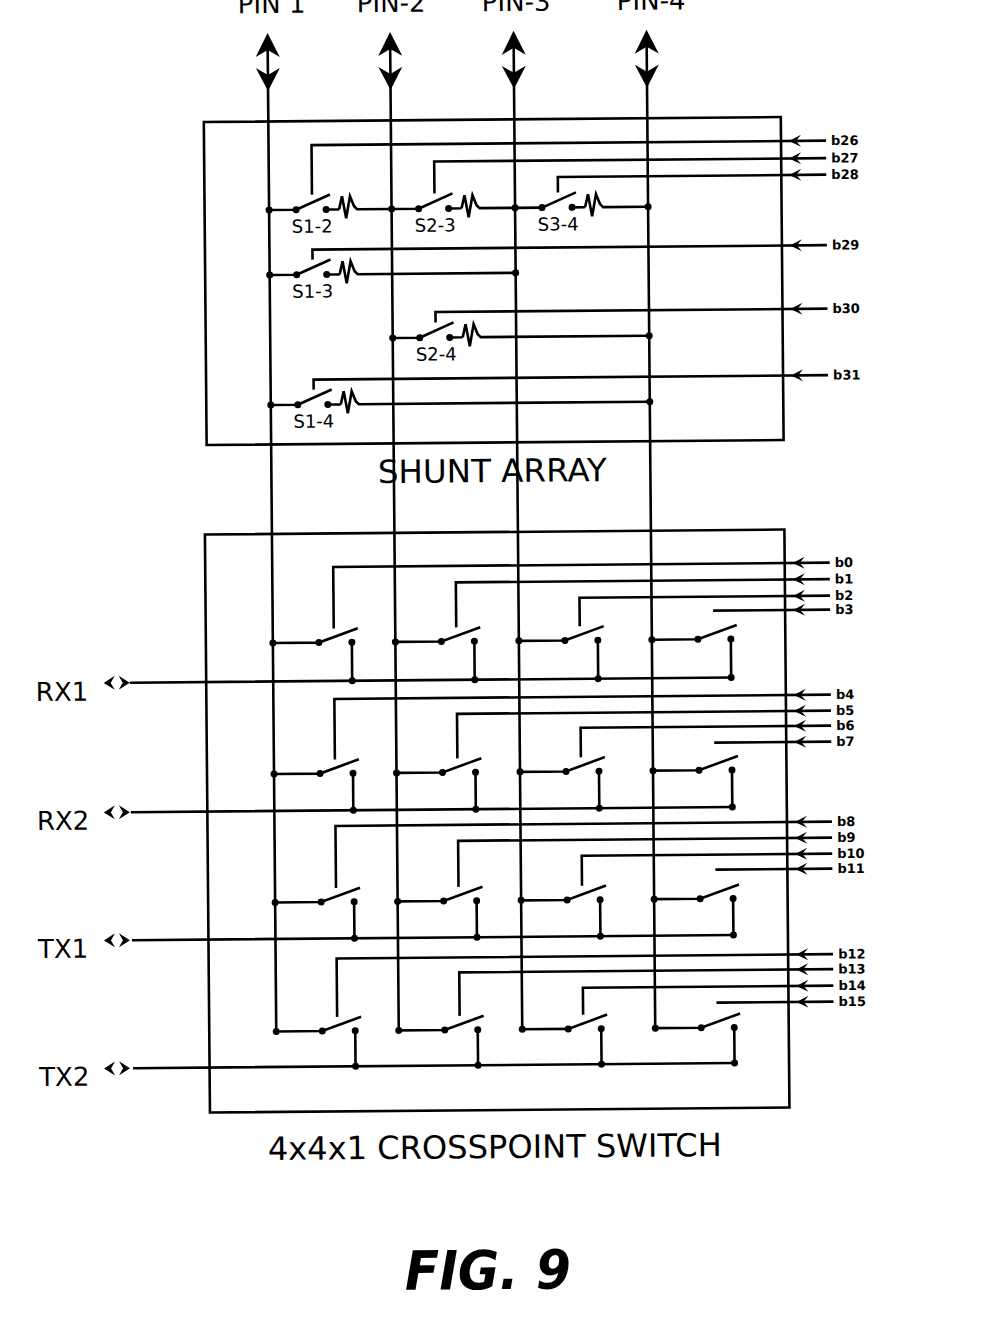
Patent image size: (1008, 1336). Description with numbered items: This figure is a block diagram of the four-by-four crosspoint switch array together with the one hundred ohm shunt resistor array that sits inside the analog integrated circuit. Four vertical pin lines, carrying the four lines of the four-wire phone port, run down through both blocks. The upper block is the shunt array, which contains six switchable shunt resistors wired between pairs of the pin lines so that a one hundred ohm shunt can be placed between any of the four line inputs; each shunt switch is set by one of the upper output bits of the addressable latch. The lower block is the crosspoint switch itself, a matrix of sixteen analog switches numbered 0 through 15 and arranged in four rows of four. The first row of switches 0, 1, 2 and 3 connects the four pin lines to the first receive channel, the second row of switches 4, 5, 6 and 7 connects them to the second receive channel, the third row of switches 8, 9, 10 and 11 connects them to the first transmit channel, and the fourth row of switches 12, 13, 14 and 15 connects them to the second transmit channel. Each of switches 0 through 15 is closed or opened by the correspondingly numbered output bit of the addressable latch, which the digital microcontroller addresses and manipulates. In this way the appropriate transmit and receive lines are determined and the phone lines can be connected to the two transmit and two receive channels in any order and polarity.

The analog switch 0 is at (313, 656).
The analog switch 1 is at (436, 655).
The analog switch 2 is at (559, 654).
The analog switch 3 is at (692, 653).
The analog switch 4 is at (314, 786).
The analog switch 5 is at (437, 785).
The analog switch 6 is at (560, 784).
The analog switch 7 is at (693, 783).
The analog switch 8 is at (316, 915).
The analog switch 9 is at (438, 914).
The analog switch 10 is at (561, 913).
The analog switch 11 is at (694, 911).
The analog switch 12 is at (317, 1044).
The analog switch 13 is at (439, 1043).
The analog switch 14 is at (563, 1042).
The analog switch 15 is at (696, 1040).